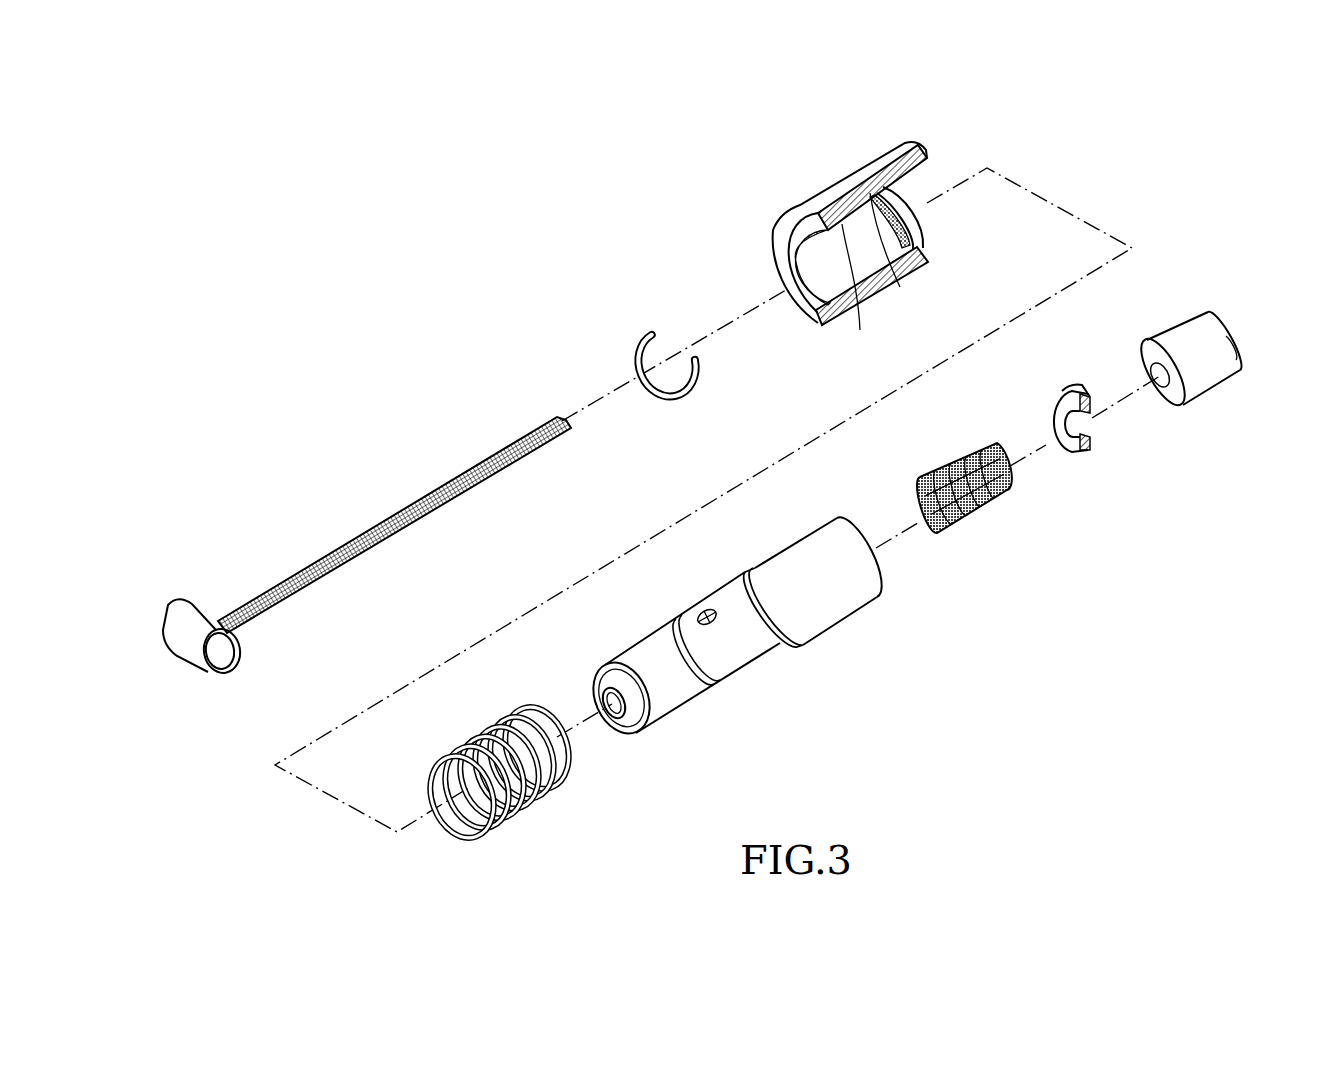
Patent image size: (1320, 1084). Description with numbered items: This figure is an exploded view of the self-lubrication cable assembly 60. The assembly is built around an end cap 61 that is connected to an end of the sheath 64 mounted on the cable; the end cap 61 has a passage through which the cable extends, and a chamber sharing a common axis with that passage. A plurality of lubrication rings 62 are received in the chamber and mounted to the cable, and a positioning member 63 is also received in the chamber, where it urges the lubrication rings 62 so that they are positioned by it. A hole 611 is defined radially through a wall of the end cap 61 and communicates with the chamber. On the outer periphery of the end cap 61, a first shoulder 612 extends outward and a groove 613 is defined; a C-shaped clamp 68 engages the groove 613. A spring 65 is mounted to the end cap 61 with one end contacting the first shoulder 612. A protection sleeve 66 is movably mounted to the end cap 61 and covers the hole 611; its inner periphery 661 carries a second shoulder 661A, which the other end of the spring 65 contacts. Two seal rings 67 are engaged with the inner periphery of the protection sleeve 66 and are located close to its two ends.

The self-lubrication cable assembly 60 is at (1043, 607).
The end cap 61 is at (734, 632).
The hole 611 is at (702, 611).
The first shoulder 612 is at (800, 635).
The groove 613 is at (672, 625).
The lubrication rings 62 is at (980, 503).
The positioning member 63 is at (1087, 452).
The sheath 64 is at (1210, 375).
The spring 65 is at (563, 768).
The protection sleeve 66 is at (852, 240).
The inner surface 661 is at (900, 287).
The second shoulder 661A is at (860, 330).
The seal rings 67 is at (797, 255).
The C-shaped clamp 68 is at (638, 340).